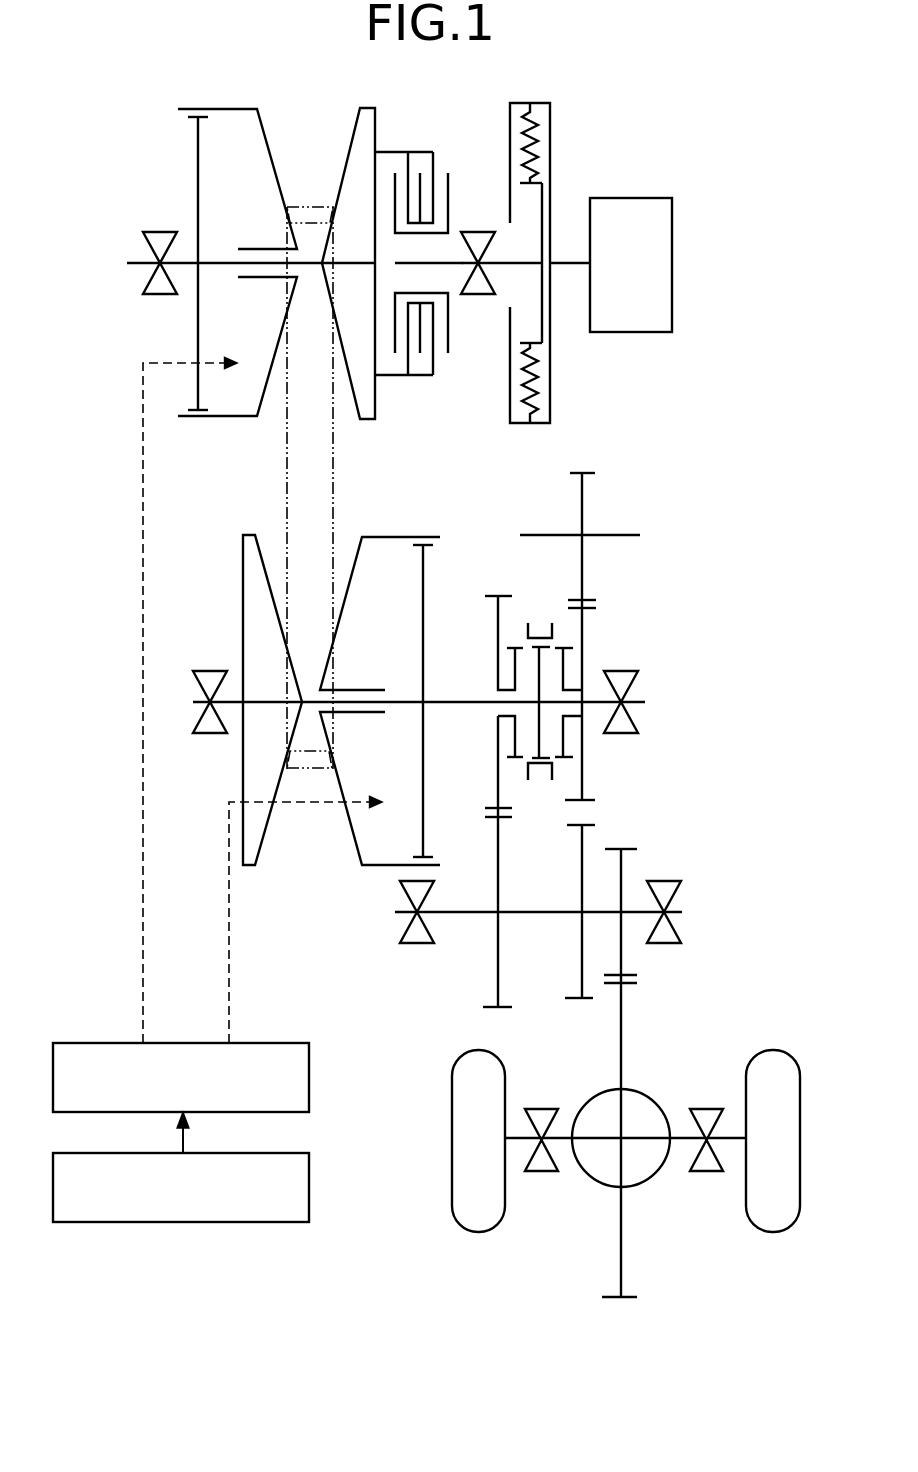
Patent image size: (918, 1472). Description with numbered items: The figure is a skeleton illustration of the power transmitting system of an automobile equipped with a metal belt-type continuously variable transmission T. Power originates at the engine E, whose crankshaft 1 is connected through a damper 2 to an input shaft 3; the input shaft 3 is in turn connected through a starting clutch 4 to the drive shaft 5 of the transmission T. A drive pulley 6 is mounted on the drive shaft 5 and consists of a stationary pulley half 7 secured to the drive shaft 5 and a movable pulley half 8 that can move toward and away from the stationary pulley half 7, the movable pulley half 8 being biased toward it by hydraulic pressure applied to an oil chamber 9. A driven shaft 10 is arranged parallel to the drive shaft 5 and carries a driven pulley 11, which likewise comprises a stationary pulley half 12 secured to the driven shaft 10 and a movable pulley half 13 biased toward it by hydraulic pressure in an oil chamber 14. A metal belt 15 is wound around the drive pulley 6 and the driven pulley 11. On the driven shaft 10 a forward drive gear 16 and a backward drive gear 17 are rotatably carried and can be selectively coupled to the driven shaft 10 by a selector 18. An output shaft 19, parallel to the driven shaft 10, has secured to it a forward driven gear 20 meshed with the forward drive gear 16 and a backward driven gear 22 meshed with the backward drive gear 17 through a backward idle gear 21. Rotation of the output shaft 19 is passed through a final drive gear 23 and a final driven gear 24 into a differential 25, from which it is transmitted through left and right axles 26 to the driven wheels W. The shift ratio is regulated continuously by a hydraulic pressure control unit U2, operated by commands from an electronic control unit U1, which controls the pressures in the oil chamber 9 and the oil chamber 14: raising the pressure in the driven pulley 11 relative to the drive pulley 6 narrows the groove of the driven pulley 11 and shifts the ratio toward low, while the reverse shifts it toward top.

The crankshaft 1 is at (568, 270).
The damper 2 is at (563, 147).
The input shaft 3 is at (498, 262).
The starting clutch 4 is at (423, 146).
The drive shaft 5 is at (214, 262).
The drive pulley 6 is at (276, 238).
The stationary pulley half 7 is at (360, 145).
The movable pulley half 8 is at (265, 143).
The oil chamber 9 is at (220, 263).
The driven shaft 10 is at (472, 698).
The driven pulley 11 is at (310, 735).
The stationary pulley half 12 is at (243, 575).
The movable pulley half 13 is at (357, 567).
The oil chamber 14 is at (407, 701).
The metal belt 15 is at (337, 487).
The forward drive gear 16 is at (490, 594).
The backward drive gear 17 is at (594, 612).
The selector 18 is at (538, 770).
The output shaft 19 is at (522, 910).
The forward driven gear 20 is at (507, 1008).
The backward idle gear 21 is at (595, 473).
The backward driven gear 22 is at (570, 1000).
The final drive gear 23 is at (630, 849).
The final driven gear 24 is at (637, 984).
The differential 25 is at (653, 1092).
The axle 26 is at (558, 1142).
The driven wheel W is at (452, 1197).
The engine E is at (631, 265).
The metal belt-type continuously variable transmission T is at (233, 472).
The electronic control unit U1 is at (312, 1175).
The hydraulic pressure control unit U2 is at (312, 1075).